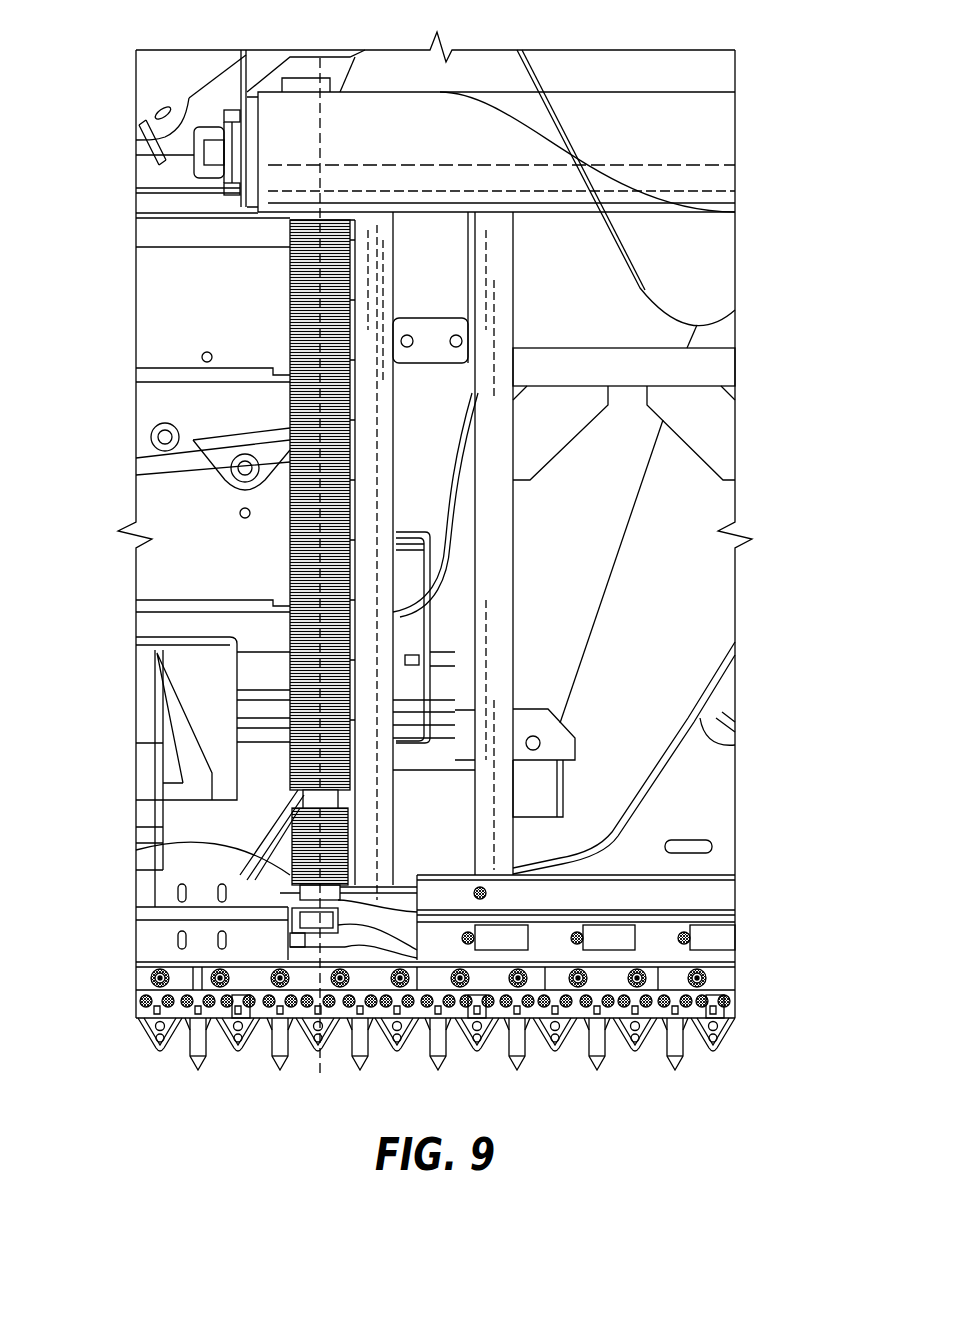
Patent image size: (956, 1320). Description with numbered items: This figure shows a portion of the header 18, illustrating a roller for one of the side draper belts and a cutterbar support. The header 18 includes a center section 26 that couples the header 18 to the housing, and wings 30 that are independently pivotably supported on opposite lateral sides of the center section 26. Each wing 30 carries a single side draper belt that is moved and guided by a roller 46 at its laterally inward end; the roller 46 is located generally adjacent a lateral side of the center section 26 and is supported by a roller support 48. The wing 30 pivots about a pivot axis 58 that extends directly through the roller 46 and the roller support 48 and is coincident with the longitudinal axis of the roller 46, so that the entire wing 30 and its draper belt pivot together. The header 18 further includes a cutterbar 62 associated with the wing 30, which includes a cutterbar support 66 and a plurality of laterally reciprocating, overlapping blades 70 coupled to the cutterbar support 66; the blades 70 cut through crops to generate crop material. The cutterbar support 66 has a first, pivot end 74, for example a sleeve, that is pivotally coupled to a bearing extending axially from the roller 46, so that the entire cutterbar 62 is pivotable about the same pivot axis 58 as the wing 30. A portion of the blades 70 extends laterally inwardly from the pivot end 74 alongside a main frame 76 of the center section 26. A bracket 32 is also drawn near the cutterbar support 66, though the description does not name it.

The header 18 is at (108, 216).
The center section 26 is at (186, 524).
The wing 30 is at (670, 520).
The bracket 32 is at (683, 893).
The roller 46 is at (283, 296).
The roller support 48 is at (290, 890).
The pivot axis 58 is at (323, 135).
The cutterbar 62 is at (733, 1052).
The cutterbar support 66 is at (558, 935).
The blade 70 is at (628, 1040).
The pivot end 74 is at (384, 938).
The main frame 76 is at (200, 714).